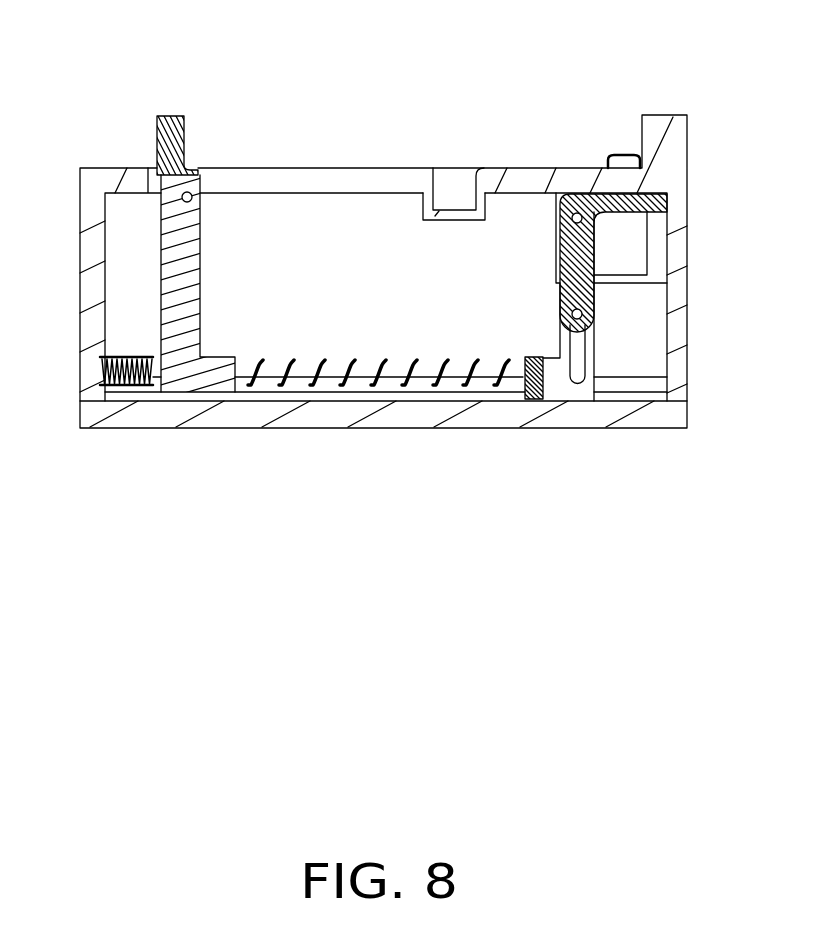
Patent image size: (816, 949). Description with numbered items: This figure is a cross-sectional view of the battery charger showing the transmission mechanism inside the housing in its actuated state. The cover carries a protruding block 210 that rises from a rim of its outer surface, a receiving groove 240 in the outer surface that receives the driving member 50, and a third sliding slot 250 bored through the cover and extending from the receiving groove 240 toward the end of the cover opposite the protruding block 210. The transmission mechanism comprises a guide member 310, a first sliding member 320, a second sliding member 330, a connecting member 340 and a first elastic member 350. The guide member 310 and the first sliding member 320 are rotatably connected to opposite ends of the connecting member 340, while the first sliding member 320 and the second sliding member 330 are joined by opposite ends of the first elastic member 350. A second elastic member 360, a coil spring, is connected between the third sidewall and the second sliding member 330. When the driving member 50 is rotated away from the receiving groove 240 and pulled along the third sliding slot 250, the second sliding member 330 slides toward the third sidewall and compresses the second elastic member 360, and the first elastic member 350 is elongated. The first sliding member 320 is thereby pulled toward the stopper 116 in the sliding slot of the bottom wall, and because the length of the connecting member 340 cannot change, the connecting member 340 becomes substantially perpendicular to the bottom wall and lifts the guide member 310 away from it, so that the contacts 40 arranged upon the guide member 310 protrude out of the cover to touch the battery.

The protruding block 210 is at (667, 147).
The third sliding slot 250 is at (349, 176).
The receiving groove 240 is at (455, 180).
The contacts 40 is at (626, 163).
The driving member 50 is at (164, 117).
The second sliding member 330 is at (168, 283).
The second elastic member 360 is at (150, 380).
The first elastic member 350 is at (345, 378).
The stopper 116 is at (523, 399).
The first sliding member 320 is at (542, 391).
The guide member 310 is at (652, 226).
The connecting member 340 is at (578, 265).